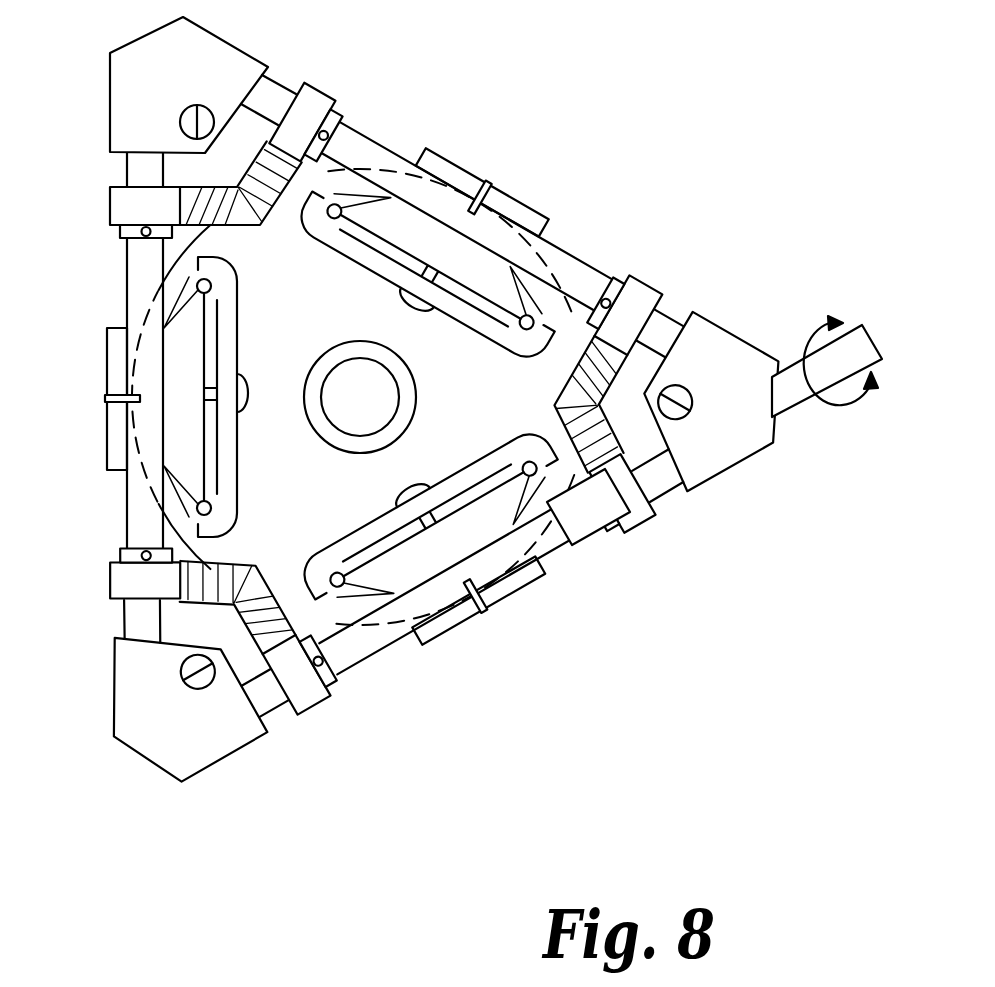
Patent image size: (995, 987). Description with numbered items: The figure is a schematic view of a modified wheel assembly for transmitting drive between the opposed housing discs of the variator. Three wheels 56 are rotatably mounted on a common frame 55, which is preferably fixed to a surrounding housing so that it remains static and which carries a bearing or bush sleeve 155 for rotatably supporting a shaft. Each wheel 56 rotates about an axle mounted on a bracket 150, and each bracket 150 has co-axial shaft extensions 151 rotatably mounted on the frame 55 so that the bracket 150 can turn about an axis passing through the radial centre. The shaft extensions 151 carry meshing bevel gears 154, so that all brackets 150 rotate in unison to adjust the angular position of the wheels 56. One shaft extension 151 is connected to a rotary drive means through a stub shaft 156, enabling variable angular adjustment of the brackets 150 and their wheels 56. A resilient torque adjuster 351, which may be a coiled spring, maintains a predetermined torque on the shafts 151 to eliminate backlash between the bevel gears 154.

The frame 55 is at (130, 697).
The wheel 56 is at (228, 317).
The bracket 150 is at (107, 438).
The shaft extension 151 is at (143, 265).
The bevel gear 154 is at (283, 80).
The bearing or bush sleeve 155 is at (333, 435).
The stub shaft 156 is at (851, 345).
The resilient torque adjuster 351 is at (590, 517).